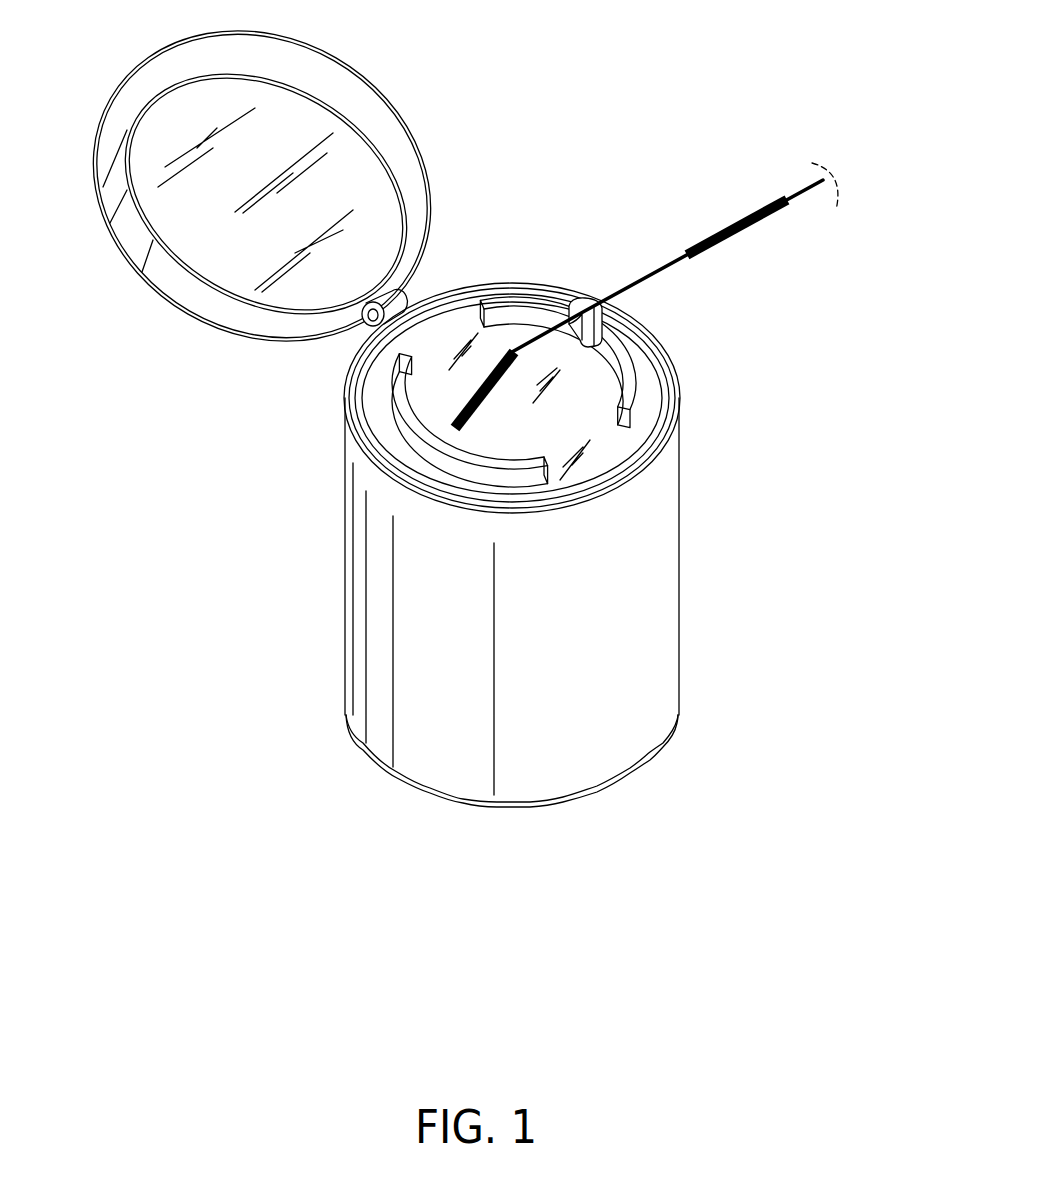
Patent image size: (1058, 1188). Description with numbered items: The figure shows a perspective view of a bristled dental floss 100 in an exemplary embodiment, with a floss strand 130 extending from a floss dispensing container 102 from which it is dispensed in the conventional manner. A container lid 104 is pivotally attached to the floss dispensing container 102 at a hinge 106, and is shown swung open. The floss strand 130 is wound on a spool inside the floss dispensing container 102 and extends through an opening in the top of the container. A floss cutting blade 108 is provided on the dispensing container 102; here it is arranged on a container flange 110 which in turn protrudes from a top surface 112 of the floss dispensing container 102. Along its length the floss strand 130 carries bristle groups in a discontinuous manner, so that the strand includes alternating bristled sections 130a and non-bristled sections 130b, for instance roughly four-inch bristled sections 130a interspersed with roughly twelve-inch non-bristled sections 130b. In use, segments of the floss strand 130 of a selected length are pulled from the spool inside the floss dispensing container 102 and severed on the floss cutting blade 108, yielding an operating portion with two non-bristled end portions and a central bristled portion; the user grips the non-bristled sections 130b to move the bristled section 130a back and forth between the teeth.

The bristled dental floss 100 is at (669, 107).
The floss dispensing container 102 is at (662, 548).
The container lid 104 is at (134, 243).
The hinge 106 is at (374, 325).
The floss cutting blade 108 is at (590, 294).
The container flange 110 is at (426, 408).
The top surface 112 is at (442, 325).
The floss strand 130 is at (695, 232).
The bristled section 130a is at (480, 400).
The non-bristled section 130b is at (806, 198).